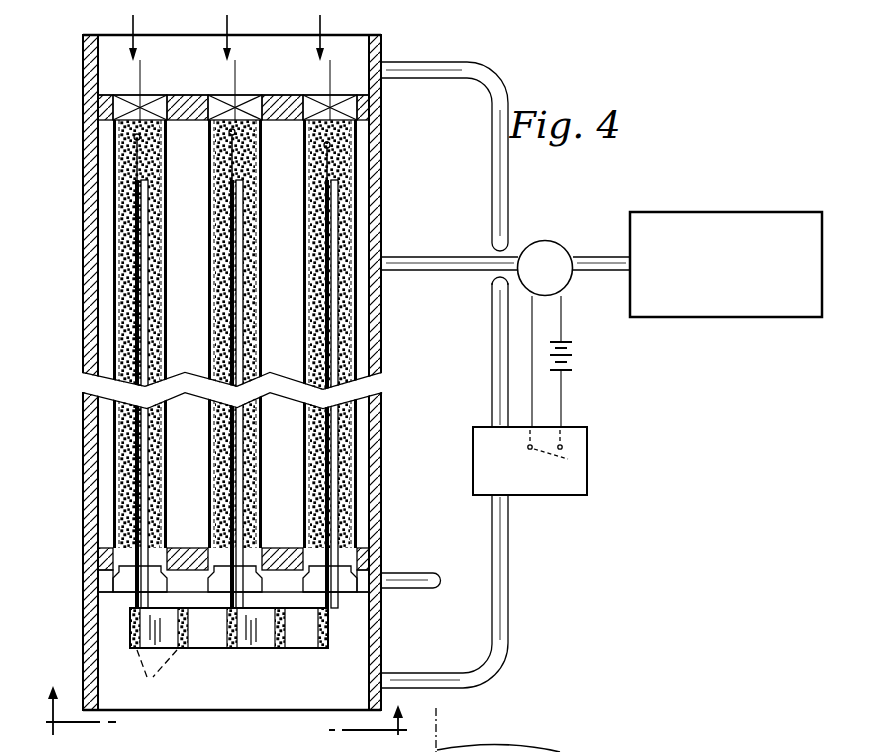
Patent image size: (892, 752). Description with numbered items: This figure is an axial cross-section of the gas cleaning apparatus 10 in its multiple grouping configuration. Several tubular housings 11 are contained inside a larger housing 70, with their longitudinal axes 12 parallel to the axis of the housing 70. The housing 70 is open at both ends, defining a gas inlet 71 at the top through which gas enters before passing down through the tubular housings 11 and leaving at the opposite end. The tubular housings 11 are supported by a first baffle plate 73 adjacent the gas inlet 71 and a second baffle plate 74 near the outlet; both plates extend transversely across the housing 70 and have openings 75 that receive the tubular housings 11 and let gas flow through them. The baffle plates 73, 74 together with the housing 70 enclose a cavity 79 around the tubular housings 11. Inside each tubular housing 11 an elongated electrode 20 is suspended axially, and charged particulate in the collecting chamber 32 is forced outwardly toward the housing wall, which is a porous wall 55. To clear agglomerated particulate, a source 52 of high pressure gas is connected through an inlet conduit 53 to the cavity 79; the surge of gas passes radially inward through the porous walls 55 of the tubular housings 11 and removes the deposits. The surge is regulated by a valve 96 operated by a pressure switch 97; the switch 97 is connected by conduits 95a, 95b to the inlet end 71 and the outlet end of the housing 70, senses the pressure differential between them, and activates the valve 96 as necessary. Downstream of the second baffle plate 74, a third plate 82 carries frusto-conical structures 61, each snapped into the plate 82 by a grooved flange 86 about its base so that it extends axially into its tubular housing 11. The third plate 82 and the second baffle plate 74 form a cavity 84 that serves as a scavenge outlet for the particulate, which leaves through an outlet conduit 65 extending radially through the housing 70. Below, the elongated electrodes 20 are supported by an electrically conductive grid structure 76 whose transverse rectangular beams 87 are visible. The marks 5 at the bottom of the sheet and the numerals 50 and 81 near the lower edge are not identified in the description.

The housing 70 is at (386, 143).
The gas inlet 71 is at (352, 42).
The longitudinal axis 12 is at (146, 72).
The openings 75 is at (188, 99).
The first baffle plate 73 is at (283, 98).
The second baffle plate 74 is at (181, 548).
The frusto-conical structure 61 is at (98, 552).
The tubular housing 11 is at (172, 242).
The porous wall 55 is at (100, 298).
The collecting chamber 32 is at (221, 295).
The elongated electrode 20 is at (234, 456).
The cavity 79 is at (362, 443).
The third plate 82 is at (177, 597).
The cavity 84 is at (100, 577).
The grooved flange 86 is at (229, 628).
The transverse rectangular beams 87 is at (154, 678).
The grid structure 76 is at (247, 650).
The conduit 95a is at (508, 90).
The conduit 95b is at (490, 622).
The inlet conduit 53 is at (406, 258).
The valve 96 is at (550, 243).
The source of high pressure gas 52 is at (720, 212).
The pressure switch 97 is at (578, 485).
The outlet conduit 65 is at (423, 571).
The section line 5- 5 is at (226, 719).
The cell assembly (adjacent figure) 50 is at (440, 747).
The plate (adjacent figure) 81 is at (496, 745).
The gas cleaning apparatus 10 is at (711, 751).